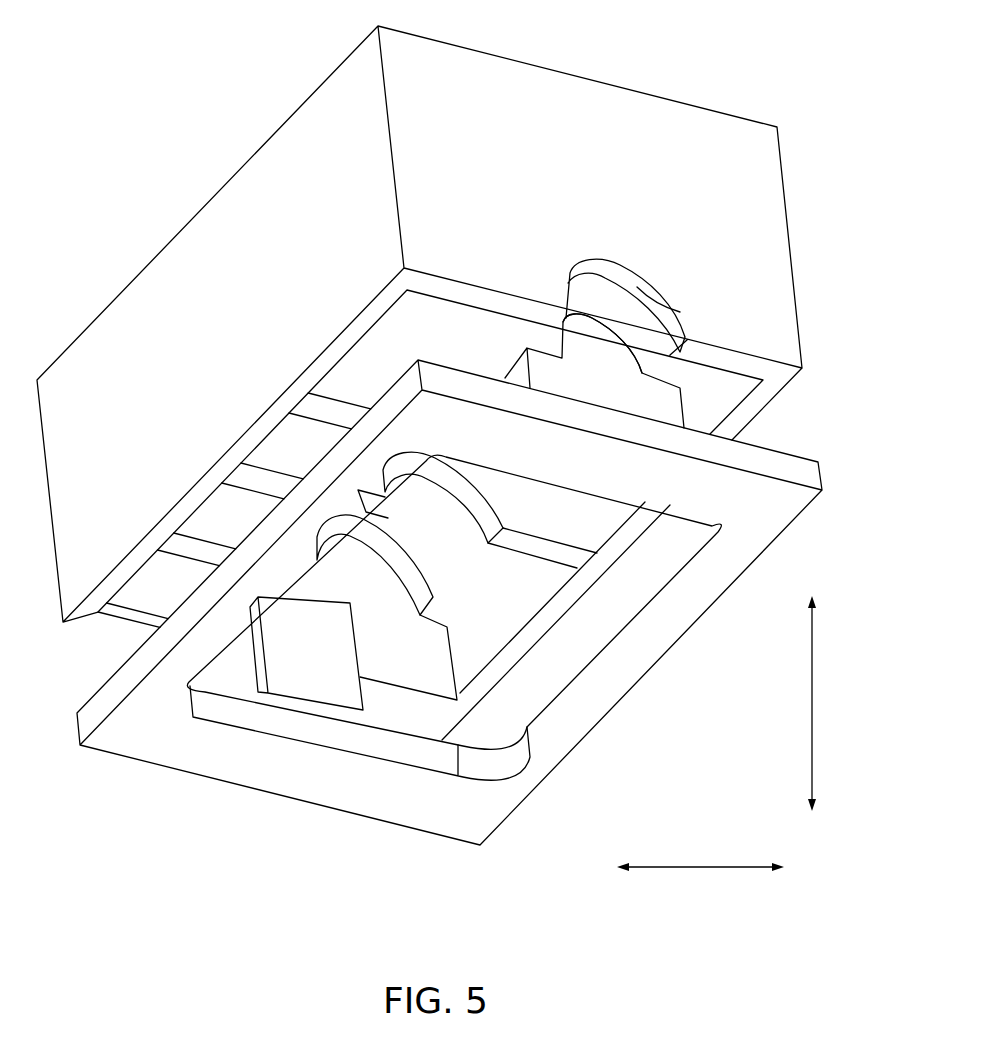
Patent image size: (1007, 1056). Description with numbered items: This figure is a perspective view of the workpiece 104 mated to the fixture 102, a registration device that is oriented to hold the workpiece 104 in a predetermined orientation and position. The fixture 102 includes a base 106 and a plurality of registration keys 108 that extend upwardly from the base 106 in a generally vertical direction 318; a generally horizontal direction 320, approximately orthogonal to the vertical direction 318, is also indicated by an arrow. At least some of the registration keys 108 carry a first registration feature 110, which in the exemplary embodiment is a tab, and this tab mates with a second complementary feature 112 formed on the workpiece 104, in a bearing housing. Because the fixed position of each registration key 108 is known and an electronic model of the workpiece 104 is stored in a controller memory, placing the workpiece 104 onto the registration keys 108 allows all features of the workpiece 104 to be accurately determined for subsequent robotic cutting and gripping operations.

The fixture 102 is at (205, 815).
The workpiece 104 is at (590, 97).
The base 106 is at (432, 800).
The registration key 108 is at (327, 665).
The first registration feature 110 is at (603, 350).
The second complementary feature 112 is at (680, 314).
The vertical direction 318 is at (812, 763).
The horizontal direction 320 is at (732, 868).